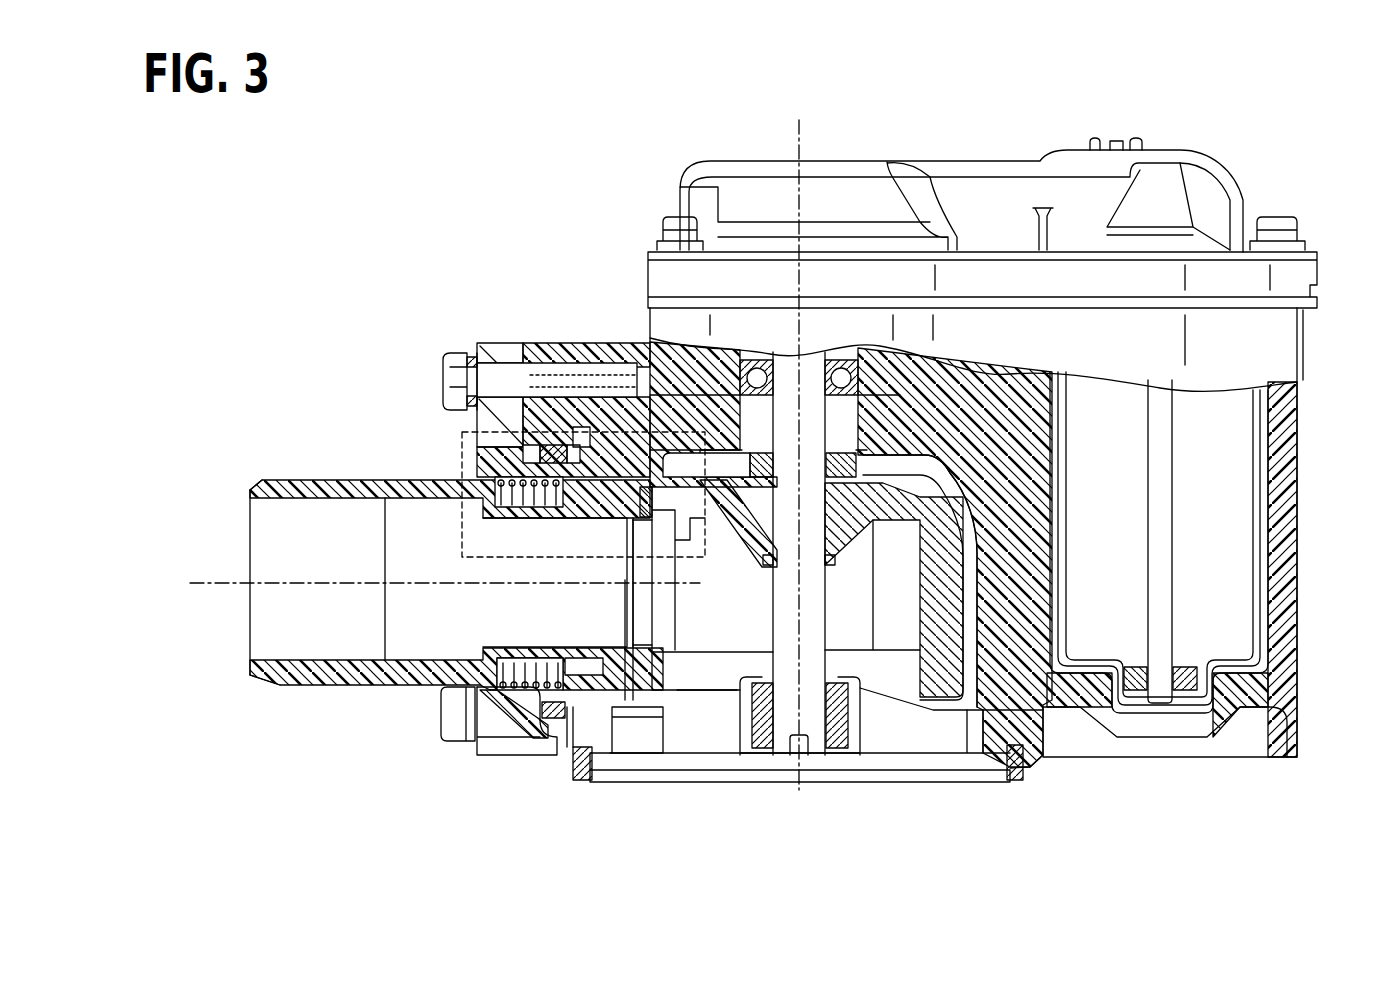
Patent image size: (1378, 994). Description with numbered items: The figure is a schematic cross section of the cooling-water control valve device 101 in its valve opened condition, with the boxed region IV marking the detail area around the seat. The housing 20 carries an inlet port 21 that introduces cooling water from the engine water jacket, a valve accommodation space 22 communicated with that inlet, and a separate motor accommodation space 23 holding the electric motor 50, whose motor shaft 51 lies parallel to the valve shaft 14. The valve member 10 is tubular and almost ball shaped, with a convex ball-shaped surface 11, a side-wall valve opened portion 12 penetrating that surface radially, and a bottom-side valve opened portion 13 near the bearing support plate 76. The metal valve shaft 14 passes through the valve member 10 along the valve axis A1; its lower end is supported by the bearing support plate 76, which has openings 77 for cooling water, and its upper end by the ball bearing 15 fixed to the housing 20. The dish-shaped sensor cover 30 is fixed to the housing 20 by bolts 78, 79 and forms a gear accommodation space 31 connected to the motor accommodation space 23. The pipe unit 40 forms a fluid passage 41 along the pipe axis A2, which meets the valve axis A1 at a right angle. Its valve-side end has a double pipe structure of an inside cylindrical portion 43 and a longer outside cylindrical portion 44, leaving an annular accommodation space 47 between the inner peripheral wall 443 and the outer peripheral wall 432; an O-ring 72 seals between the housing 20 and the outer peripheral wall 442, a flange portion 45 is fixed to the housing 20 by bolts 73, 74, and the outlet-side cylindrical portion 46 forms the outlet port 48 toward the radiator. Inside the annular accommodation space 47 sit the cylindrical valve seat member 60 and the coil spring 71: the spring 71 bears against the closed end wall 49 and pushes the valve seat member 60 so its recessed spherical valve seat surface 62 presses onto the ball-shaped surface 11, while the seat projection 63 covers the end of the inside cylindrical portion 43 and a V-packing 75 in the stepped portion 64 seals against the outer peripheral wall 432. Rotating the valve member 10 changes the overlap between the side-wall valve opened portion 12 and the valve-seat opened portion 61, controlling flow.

The valve device 101 is at (1296, 132).
The valve member 10 is at (950, 685).
The ball-shaped surface 11 is at (1050, 555).
The side-wall valve opened portion 12 is at (738, 690).
The bottom-side valve opened portion 13 is at (898, 700).
The valve shaft 14 is at (805, 725).
The ball bearing 15 is at (758, 358).
The housing 20 is at (540, 415).
The inlet port 21 is at (1010, 802).
The valve accommodation space 22 is at (975, 750).
The motor accommodation space 23 is at (1282, 425).
The sensor cover 30 is at (766, 200).
The gear accommodation space 31 is at (1170, 287).
The pipe unit 40 is at (304, 707).
The fluid passage 41 is at (422, 630).
The inside cylindrical portion 43 is at (590, 440).
The outside cylindrical portion 44 is at (636, 400).
The flange portion 45 is at (487, 343).
The outlet-side cylindrical portion 46 is at (340, 485).
The annular accommodation space 47 is at (520, 750).
The outlet port 48 is at (243, 486).
The closed end wall 49 is at (490, 480).
The electric motor 50 is at (1240, 490).
The motor shaft 51 is at (1160, 602).
The valve seat member 60 is at (630, 775).
The valve-seat opened portion 61 is at (690, 640).
The valve seat surface 62 is at (655, 610).
The seat projection 63 is at (672, 630).
The stepped portion 64 is at (500, 510).
The spring 71 is at (515, 725).
The O-ring 72 is at (545, 722).
The bolt 73 is at (455, 352).
The bolt 74 is at (450, 715).
The V-packing 75 is at (583, 715).
The bearing support plate 76 is at (872, 745).
The openings 77 is at (925, 720).
The bolt 78 is at (672, 217).
The bolt 79 is at (1275, 223).
The outer peripheral wall 432 is at (562, 395).
The outer peripheral wall 442 is at (558, 715).
The inner peripheral wall 443 is at (638, 720).
The valve axis A1 is at (805, 128).
The pipe axis A2 is at (212, 583).
The section IV is at (460, 525).